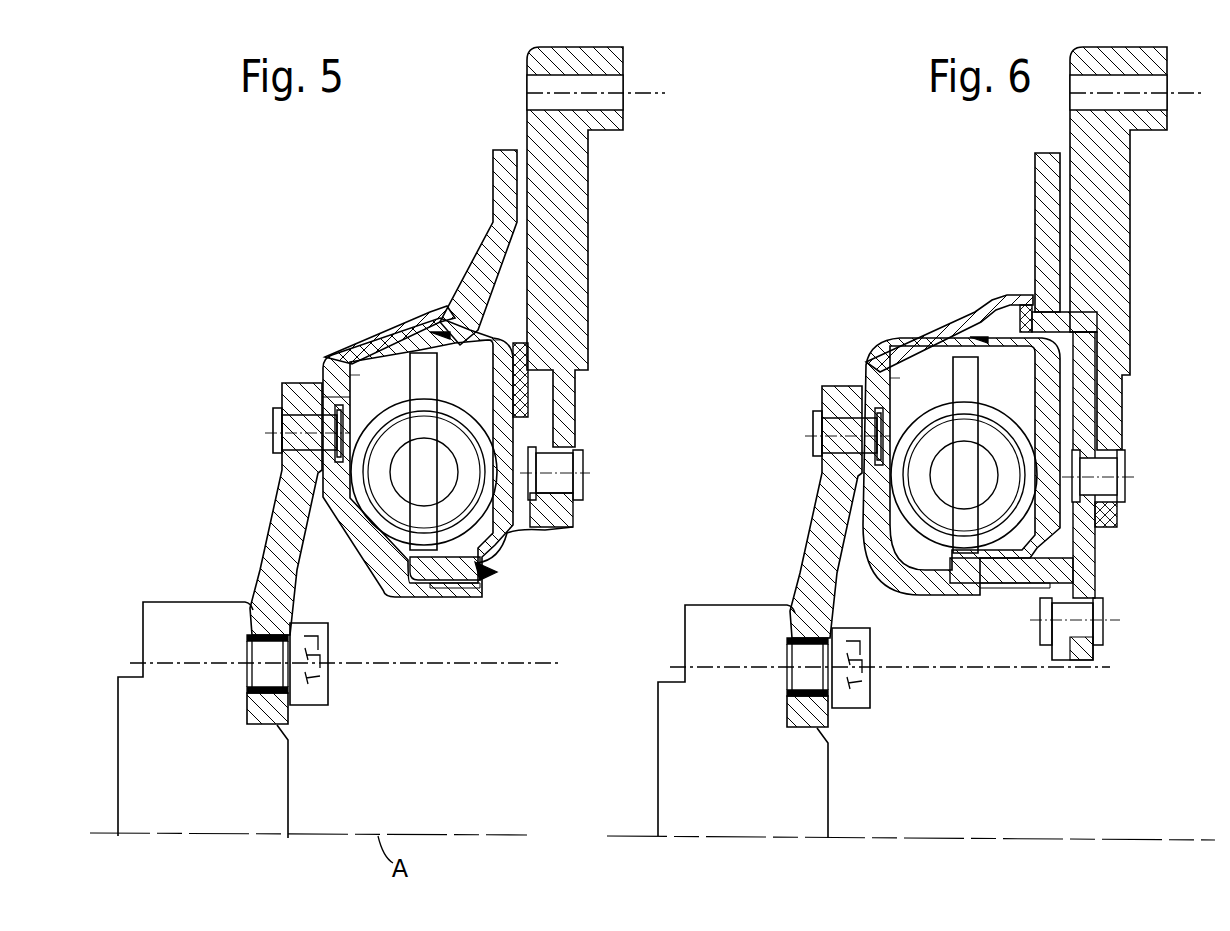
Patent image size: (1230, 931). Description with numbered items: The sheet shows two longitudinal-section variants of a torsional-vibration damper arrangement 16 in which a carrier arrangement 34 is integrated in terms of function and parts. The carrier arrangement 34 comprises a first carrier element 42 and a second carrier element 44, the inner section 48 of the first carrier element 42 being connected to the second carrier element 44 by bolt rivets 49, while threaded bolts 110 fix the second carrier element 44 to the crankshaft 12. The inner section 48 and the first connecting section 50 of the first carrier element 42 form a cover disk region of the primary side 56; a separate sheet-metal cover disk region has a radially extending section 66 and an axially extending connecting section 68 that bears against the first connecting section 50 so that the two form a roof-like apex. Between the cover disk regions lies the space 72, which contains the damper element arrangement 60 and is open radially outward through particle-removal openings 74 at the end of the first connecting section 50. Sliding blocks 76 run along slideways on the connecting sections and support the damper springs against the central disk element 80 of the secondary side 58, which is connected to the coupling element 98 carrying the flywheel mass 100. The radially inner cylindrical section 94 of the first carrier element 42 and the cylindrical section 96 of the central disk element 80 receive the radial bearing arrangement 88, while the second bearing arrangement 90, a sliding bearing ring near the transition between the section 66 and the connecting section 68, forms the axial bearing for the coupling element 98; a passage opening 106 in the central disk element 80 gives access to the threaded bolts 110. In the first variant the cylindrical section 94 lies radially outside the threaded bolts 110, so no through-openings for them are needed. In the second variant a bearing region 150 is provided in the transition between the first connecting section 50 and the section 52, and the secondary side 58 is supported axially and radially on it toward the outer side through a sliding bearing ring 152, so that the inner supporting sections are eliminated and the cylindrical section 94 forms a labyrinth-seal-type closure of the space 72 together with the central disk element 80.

In FIG. 5, the crankshaft 12 is at (128, 780).
In FIG. 6, the crankshaft 12 is at (668, 801).
In FIG. 5, the torsional-vibration damper arrangement 16 is at (410, 212).
In FIG. 6, the torsional-vibration damper arrangement 16 is at (993, 163).
In FIG. 6, the carrier arrangement 34 is at (978, 193).
In FIG. 5, the first carrier element 42 is at (330, 470).
In FIG. 6, the first carrier element 42 is at (896, 336).
In FIG. 5, the second carrier element 44 is at (272, 545).
In FIG. 6, the second carrier element 44 is at (815, 545).
In FIG. 5, the inner section 48 is at (322, 397).
In FIG. 5, the bolt rivets 49 is at (298, 428).
In FIG. 6, the bolt rivets 49 is at (840, 445).
In FIG. 5, the first connecting section 50 is at (383, 327).
In FIG. 6, the first connecting section 50 is at (947, 330).
In FIG. 5, the section 52 is at (503, 195).
In FIG. 6, the section 52 is at (1045, 228).
In FIG. 6, the primary side 56 is at (843, 361).
In FIG. 6, the secondary side 58 is at (1145, 360).
In FIG. 5, the damper element arrangement 60 is at (478, 535).
In FIG. 6, the damper element arrangement 60 is at (1008, 549).
In FIG. 5, the section 66 is at (508, 423).
In FIG. 5, the connecting section 68 is at (513, 330).
In FIG. 5, the space 72 is at (478, 380).
In FIG. 6, the space 72 is at (1025, 405).
In FIG. 5, the particle-removal openings 74 is at (440, 325).
In FIG. 5, the sliding blocks 76 is at (365, 372).
In FIG. 6, the sliding blocks 76 is at (905, 380).
In FIG. 5, the central disk element 80 is at (418, 463).
In FIG. 6, the central disk element 80 is at (1092, 587).
In FIG. 5, the radial bearing arrangement 88 is at (495, 590).
In FIG. 5, the second bearing arrangement 90 is at (500, 340).
In FIG. 5, the cylindrical section 94 is at (447, 597).
In FIG. 6, the cylindrical section 94 is at (942, 592).
In FIG. 5, the cylindrical section 96 is at (483, 592).
In FIG. 5, the coupling element 98 is at (545, 515).
In FIG. 6, the coupling element 98 is at (1085, 520).
In FIG. 5, the flywheel mass 100 is at (575, 230).
In FIG. 6, the flywheel mass 100 is at (1118, 248).
In FIG. 5, the passage opening 106 is at (485, 553).
In FIG. 5, the threaded bolts 110 is at (328, 692).
In FIG. 6, the threaded bolts 110 is at (872, 695).
In FIG. 6, the bearing region 150 is at (1020, 290).
In FIG. 6, the sliding bearing ring 152 is at (1100, 318).